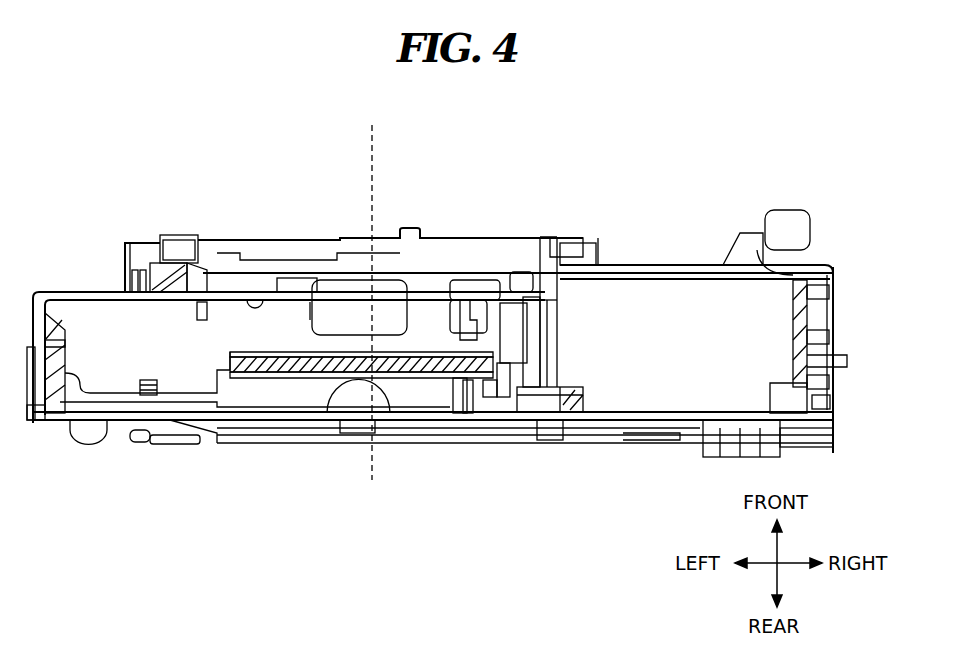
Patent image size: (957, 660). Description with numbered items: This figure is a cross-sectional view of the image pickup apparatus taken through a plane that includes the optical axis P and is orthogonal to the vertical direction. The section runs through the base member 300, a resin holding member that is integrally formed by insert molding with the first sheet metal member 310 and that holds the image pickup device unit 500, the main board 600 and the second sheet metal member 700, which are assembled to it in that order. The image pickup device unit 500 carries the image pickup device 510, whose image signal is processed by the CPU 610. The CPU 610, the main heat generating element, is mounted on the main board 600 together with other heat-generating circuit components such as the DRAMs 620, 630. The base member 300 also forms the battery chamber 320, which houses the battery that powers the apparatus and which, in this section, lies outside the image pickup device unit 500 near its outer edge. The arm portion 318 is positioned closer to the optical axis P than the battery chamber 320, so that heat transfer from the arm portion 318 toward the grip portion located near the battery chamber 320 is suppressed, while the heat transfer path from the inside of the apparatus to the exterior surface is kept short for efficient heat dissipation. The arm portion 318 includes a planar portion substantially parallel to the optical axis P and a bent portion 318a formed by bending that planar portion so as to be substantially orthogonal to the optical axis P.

The base member 300 is at (533, 247).
The first sheet metal member 310 is at (684, 264).
The arm portion 318 is at (555, 337).
The bent portion 318a is at (540, 402).
The battery chamber 320 is at (735, 325).
The image pickup device unit 500 is at (428, 340).
The image pickup device 510 is at (382, 360).
The main board 600 is at (487, 420).
The CPU 610 is at (442, 420).
The DRAM 620 is at (287, 420).
The DRAM 630 is at (238, 412).
The second sheet metal member 700 is at (358, 443).
The optical axis P is at (370, 152).